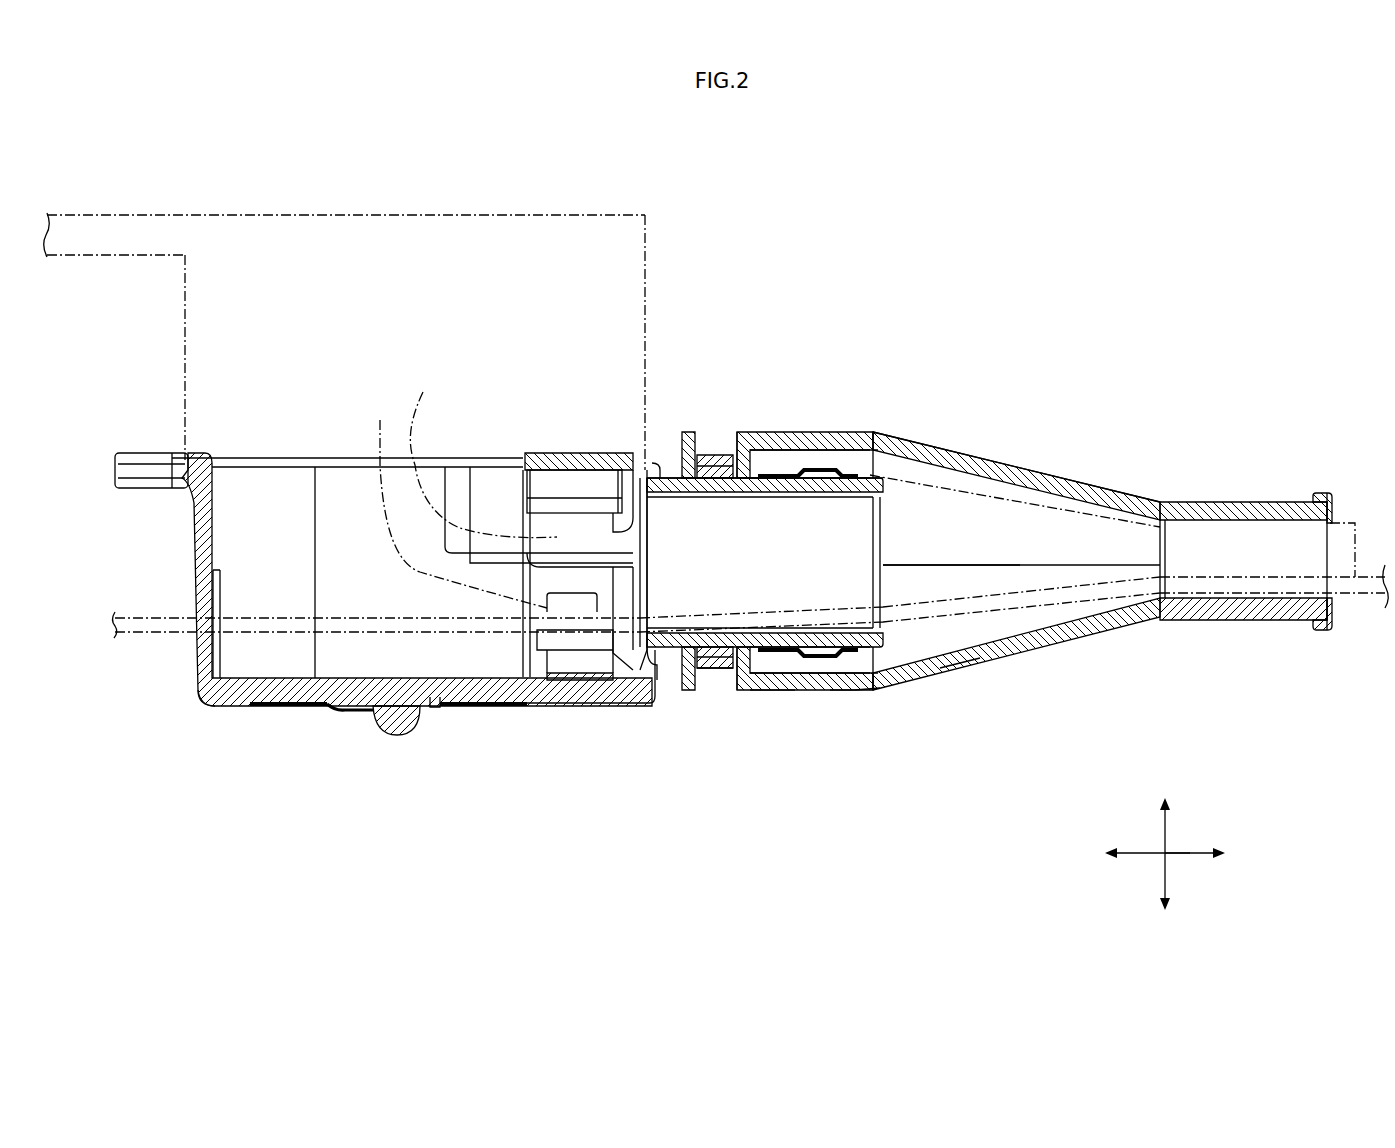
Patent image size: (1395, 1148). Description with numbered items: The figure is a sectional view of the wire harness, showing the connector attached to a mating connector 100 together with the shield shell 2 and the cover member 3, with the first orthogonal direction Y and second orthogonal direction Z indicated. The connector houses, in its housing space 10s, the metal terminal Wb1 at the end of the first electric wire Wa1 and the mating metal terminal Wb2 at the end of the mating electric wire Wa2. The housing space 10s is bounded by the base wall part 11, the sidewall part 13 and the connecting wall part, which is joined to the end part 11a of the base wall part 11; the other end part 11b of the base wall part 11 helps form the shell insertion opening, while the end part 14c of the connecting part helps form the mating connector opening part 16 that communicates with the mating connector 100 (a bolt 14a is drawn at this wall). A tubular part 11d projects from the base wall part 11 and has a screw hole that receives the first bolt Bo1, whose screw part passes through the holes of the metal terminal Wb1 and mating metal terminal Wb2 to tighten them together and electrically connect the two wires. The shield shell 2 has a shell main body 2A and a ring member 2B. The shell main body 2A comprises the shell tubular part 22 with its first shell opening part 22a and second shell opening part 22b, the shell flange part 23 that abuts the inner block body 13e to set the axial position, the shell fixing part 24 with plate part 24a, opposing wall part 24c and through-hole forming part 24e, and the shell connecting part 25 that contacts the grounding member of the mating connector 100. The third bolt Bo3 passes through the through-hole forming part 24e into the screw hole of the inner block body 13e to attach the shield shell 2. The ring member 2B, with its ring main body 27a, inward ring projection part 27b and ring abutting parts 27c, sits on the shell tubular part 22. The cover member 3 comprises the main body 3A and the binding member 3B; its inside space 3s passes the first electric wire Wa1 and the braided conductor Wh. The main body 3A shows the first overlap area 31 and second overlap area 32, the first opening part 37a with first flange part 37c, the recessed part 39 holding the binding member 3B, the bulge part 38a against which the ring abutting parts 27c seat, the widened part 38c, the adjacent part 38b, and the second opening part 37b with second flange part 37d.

The mating connector 100 is at (437, 207).
The housing space 10s is at (267, 475).
The bolt 14a is at (217, 450).
The end part of the connecting part 14c is at (193, 535).
The sidewall part 13 is at (337, 470).
The mating connector opening part 16 is at (352, 463).
The base wall part 11 is at (297, 705).
The end part of the base wall part 11a is at (200, 710).
The tubular part 11d is at (475, 700).
The inner block body 13e is at (607, 700).
The other end part of the base wall part 11b is at (657, 700).
The shell fixing part 24 is at (607, 442).
The plate part 24a is at (590, 455).
The opposing wall part 24c is at (522, 480).
The through-hole forming part 24e is at (630, 470).
The first bolt Bo1 is at (545, 485).
The third bolt Bo3 is at (548, 600).
The shell connecting part 25 is at (558, 700).
The metal terminal Wb1 is at (477, 450).
The mating metal terminal Wb2 is at (450, 501).
The shell flange part 23 is at (663, 700).
The shell main body 2A is at (668, 463).
The ring member 2B is at (878, 440).
The shield shell 2 is at (1040, 892).
The first shell opening part 22a is at (660, 478).
The first flange part 37c is at (688, 432).
The binding member 3B is at (712, 443).
The recessed part 39 is at (722, 700).
The second overlap area 32 is at (742, 432).
The first overlap area 31 is at (738, 445).
The first opening part 37a is at (765, 473).
The shell tubular part 22 is at (843, 462).
The bulge part 38a is at (763, 690).
The ring main body 27a is at (870, 690).
The ring projection part 27b is at (843, 690).
The ring abutting part 27c is at (782, 690).
The cover member 3 is at (1243, 360).
The main body 3A is at (1031, 381).
The second shell opening part 22b is at (880, 510).
The inside space 3s is at (1023, 547).
The widened part 38c is at (970, 680).
The adjacent part 38b is at (1210, 613).
The second opening part 37b is at (1317, 567).
The second flange part 37d is at (1320, 492).
The braided conductor Wh is at (1340, 520).
The first electric wire Wa1 is at (1370, 590).
The mating electric wire Wa2 is at (160, 645).
The second orthogonal direction Z is at (1167, 822).
The first orthogonal direction Y is at (1185, 857).